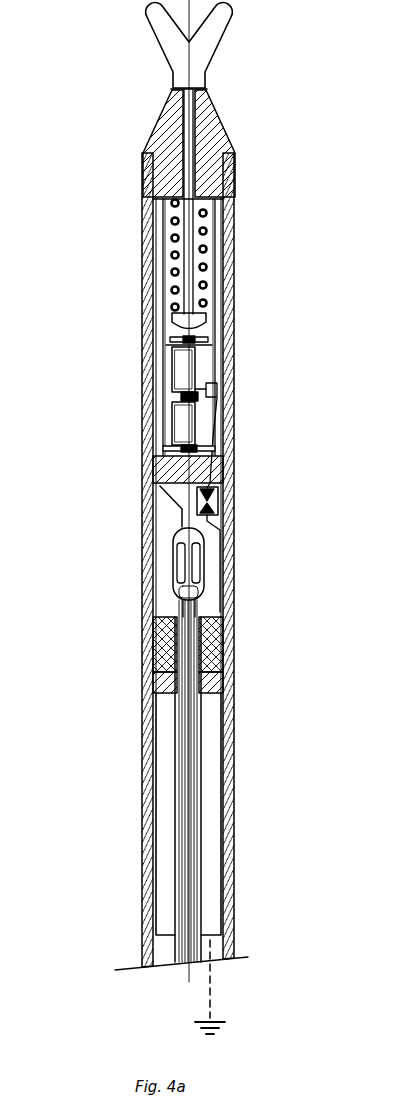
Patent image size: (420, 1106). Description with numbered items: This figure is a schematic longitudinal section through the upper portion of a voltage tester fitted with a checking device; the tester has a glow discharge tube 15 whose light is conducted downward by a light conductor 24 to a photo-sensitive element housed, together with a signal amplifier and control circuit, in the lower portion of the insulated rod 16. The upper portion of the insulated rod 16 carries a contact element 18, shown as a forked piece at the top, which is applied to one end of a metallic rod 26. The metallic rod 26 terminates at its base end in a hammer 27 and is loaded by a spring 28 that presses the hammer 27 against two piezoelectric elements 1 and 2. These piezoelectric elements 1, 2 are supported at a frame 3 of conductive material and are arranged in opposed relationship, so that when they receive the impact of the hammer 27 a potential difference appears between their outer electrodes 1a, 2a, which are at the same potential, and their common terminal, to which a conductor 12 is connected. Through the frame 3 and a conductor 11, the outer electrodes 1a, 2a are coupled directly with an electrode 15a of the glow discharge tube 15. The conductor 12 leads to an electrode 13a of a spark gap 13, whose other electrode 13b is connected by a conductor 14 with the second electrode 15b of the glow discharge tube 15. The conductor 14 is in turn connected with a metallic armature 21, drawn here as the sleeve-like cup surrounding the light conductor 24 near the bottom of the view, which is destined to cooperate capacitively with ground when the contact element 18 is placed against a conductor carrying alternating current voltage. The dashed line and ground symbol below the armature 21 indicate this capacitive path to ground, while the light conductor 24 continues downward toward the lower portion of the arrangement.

The contact element 18 is at (194, 51).
The metallic rod 26 is at (188, 212).
The spring 28 is at (202, 268).
The hammer 27 is at (198, 323).
The outer electrode 1a is at (208, 341).
The frame 3 is at (178, 352).
The piezoelectric element 1 is at (178, 385).
The conductor 12 is at (217, 395).
The piezoelectric element 2 is at (187, 421).
The outer electrode 2a is at (175, 448).
The conductor 11 is at (163, 493).
The spark gap 13 is at (274, 517).
The electrode of spark gap 13a is at (207, 489).
The electrode of spark gap 13b is at (209, 511).
The conductor 14 is at (218, 562).
The electrode of glow discharge tube 15a is at (181, 564).
The glow discharge tube 15 is at (183, 590).
The electrode of glow discharge tube 15b is at (202, 588).
The insulated rod 16 is at (228, 750).
The light conductor 24 is at (184, 806).
The metallic armature 21 is at (218, 883).